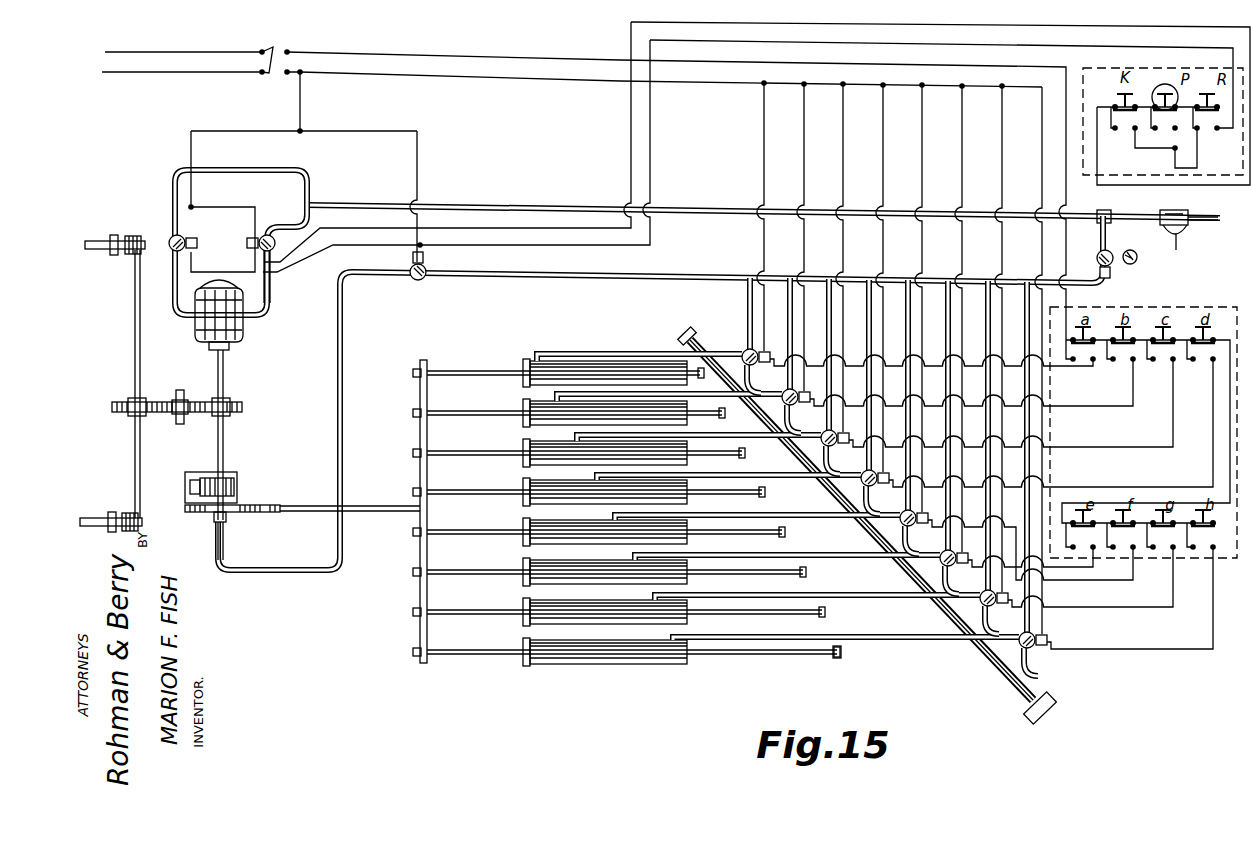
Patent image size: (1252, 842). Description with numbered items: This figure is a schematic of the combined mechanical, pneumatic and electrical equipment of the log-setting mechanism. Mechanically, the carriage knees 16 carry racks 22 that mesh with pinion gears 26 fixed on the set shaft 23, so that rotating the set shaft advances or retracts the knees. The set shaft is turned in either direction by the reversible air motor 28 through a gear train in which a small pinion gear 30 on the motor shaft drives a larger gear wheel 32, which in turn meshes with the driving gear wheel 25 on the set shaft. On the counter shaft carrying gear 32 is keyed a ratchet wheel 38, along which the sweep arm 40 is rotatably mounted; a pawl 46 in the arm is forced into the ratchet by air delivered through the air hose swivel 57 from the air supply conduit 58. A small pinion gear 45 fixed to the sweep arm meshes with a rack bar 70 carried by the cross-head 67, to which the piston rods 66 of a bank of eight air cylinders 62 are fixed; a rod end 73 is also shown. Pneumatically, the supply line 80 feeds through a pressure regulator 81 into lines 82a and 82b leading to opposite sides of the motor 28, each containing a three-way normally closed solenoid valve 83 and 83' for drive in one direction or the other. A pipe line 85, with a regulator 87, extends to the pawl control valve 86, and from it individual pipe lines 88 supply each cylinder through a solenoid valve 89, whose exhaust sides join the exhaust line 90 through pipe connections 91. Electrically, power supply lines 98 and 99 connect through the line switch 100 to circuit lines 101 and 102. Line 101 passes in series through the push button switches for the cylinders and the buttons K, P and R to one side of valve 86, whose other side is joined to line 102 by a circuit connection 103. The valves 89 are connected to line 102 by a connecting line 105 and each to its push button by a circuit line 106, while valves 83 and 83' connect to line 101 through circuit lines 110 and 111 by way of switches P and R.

The carriage knee 16 is at (96, 240).
The rack 22 is at (116, 236).
The set shaft 23 is at (134, 331).
The driving gear wheel 25 is at (114, 400).
The pinion gear 26 is at (130, 256).
The reversible air motor 28 is at (254, 324).
The pinion gear 30 is at (236, 402).
The gear wheel 32 is at (176, 390).
The ratchet wheel 38 is at (244, 478).
The sweep arm 40 is at (188, 473).
The pinion gear 45 is at (228, 517).
The pawl 46 is at (188, 512).
The air hose swivel 57 is at (226, 536).
The air supply conduit 58 is at (294, 572).
The air cylinder 62 is at (612, 364).
The piston rod 66 is at (447, 376).
The cross-head 67 is at (416, 438).
The rack bar 70 is at (308, 506).
The rod end 73 is at (834, 659).
The supply line 80 is at (1198, 223).
The pressure regulator 81 is at (1180, 250).
The line 82a is at (172, 183).
The line 82b is at (270, 292).
The three-way normally closed solenoid valve 83 is at (267, 217).
The three-way normally closed solenoid valve 83' is at (212, 238).
The pipe line 85 is at (588, 282).
The pawl control valve 86 is at (412, 282).
The regulator 87 is at (1134, 262).
The pipe line 88 is at (746, 298).
The three-way normally closed solenoid valve 89 is at (744, 348).
The exhaust line 90 is at (903, 572).
The pipe connection 91 is at (760, 378).
The electrical power supply line 98 is at (196, 42).
The electrical power supply line 99 is at (166, 78).
The line switch 100 is at (258, 54).
The circuit line 101 is at (417, 54).
The circuit line 102 is at (298, 103).
The circuit connection 103 is at (338, 132).
The connecting line 105 is at (426, 77).
The circuit line 106 is at (1088, 366).
The circuit line 110 is at (627, 136).
The circuit line 111 is at (652, 136).